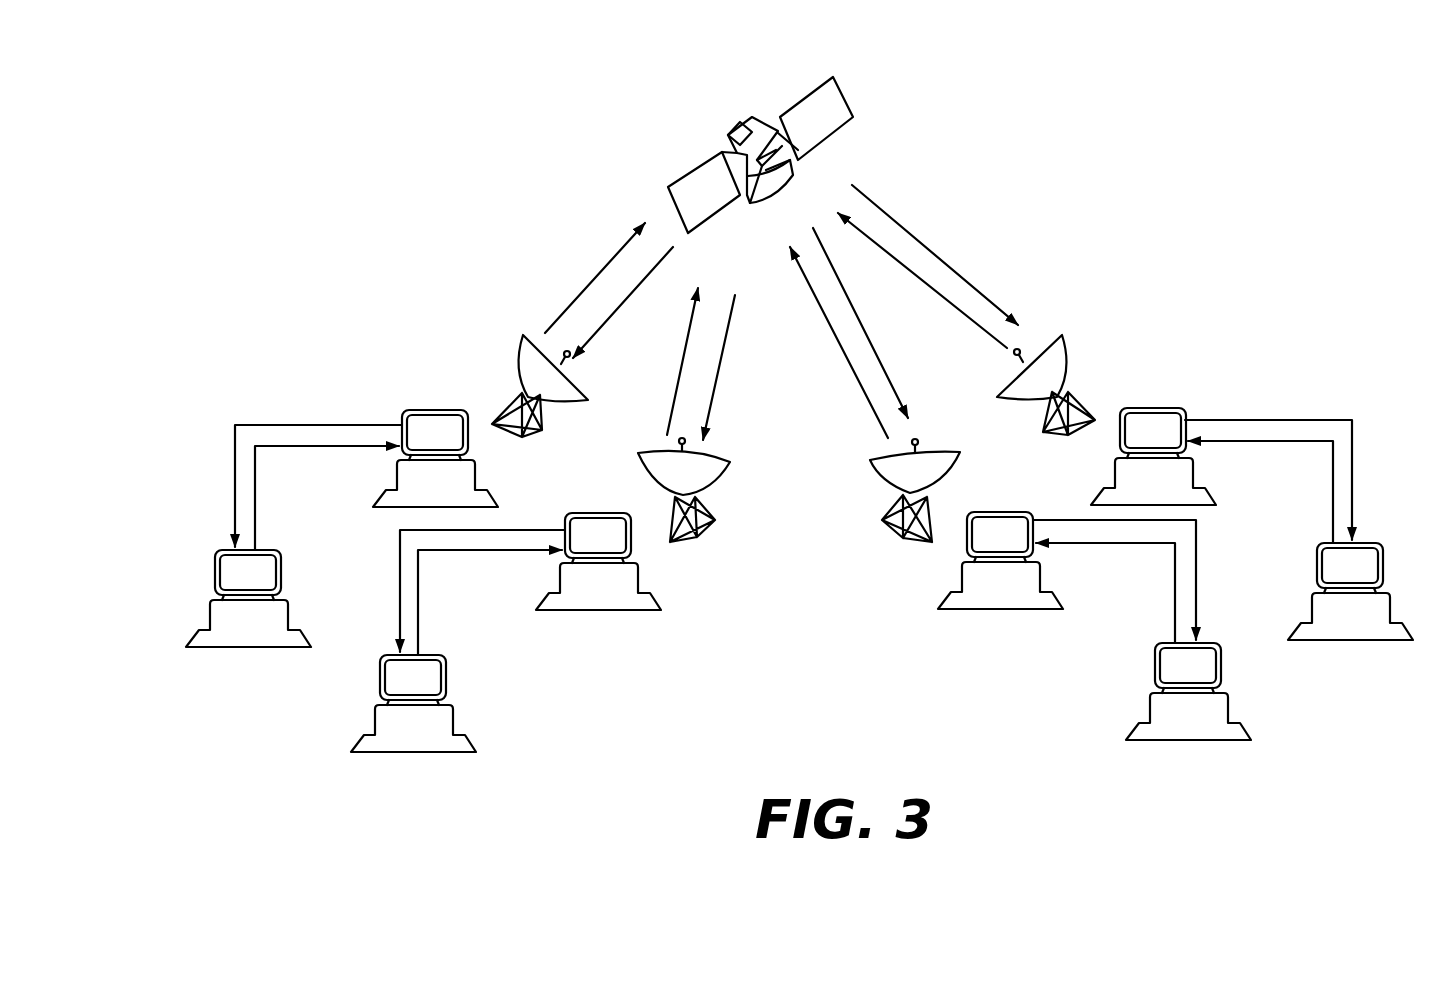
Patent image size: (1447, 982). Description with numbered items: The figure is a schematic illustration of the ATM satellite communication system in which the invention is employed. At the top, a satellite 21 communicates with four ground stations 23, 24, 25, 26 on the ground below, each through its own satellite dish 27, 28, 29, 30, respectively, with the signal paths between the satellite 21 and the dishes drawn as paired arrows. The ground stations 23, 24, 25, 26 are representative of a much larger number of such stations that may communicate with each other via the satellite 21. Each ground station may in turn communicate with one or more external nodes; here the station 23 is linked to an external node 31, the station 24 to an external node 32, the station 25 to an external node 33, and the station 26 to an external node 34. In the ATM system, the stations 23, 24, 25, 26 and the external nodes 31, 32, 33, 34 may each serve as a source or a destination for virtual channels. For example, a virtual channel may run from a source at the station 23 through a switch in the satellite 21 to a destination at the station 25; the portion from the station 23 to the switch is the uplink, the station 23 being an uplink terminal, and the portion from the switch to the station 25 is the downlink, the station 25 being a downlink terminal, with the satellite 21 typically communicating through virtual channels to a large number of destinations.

The satellite 21 is at (746, 127).
The ground station 23 is at (396, 468).
The ground station 24 is at (1193, 466).
The ground station 25 is at (558, 578).
The ground station 26 is at (1041, 576).
The satellite dish 27 is at (520, 362).
The satellite dish 28 is at (1066, 352).
The satellite dish 29 is at (645, 465).
The satellite dish 30 is at (960, 456).
The external node 31 is at (208, 612).
The external node 32 is at (1390, 602).
The external node 33 is at (372, 716).
The external node 34 is at (1228, 708).